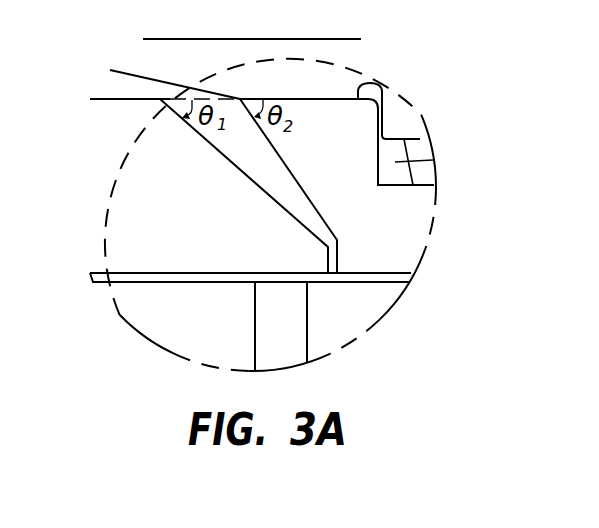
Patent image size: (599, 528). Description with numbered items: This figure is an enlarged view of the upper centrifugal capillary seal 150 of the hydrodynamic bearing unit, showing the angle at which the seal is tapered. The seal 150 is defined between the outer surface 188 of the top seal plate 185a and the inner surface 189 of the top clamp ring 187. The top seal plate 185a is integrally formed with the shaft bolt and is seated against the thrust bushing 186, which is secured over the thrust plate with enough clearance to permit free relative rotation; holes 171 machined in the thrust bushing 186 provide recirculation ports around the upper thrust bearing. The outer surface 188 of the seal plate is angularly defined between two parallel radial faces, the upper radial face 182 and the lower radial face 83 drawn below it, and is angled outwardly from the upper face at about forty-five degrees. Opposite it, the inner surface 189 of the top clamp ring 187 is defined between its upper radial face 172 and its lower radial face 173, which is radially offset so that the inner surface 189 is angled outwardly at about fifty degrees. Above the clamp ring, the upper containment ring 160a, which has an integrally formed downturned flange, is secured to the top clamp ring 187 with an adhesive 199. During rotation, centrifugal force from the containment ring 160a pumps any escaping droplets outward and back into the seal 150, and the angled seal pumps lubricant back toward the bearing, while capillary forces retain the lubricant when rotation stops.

The upper containment ring 160a is at (320, 79).
The upper radial face 182 is at (113, 104).
The top seal plate 185a is at (140, 213).
The upper centrifugal capillary seal 150 is at (275, 186).
The outer surface 188 is at (269, 198).
The inner surface 189 is at (305, 192).
The upper radial face 172 is at (341, 105).
The adhesive 199 is at (434, 142).
The top clamp ring 187 is at (402, 247).
The lower radial face 173 is at (400, 265).
The base plate 83 is at (166, 266).
The thrust bushing 186 is at (365, 317).
The holes 171 is at (287, 343).